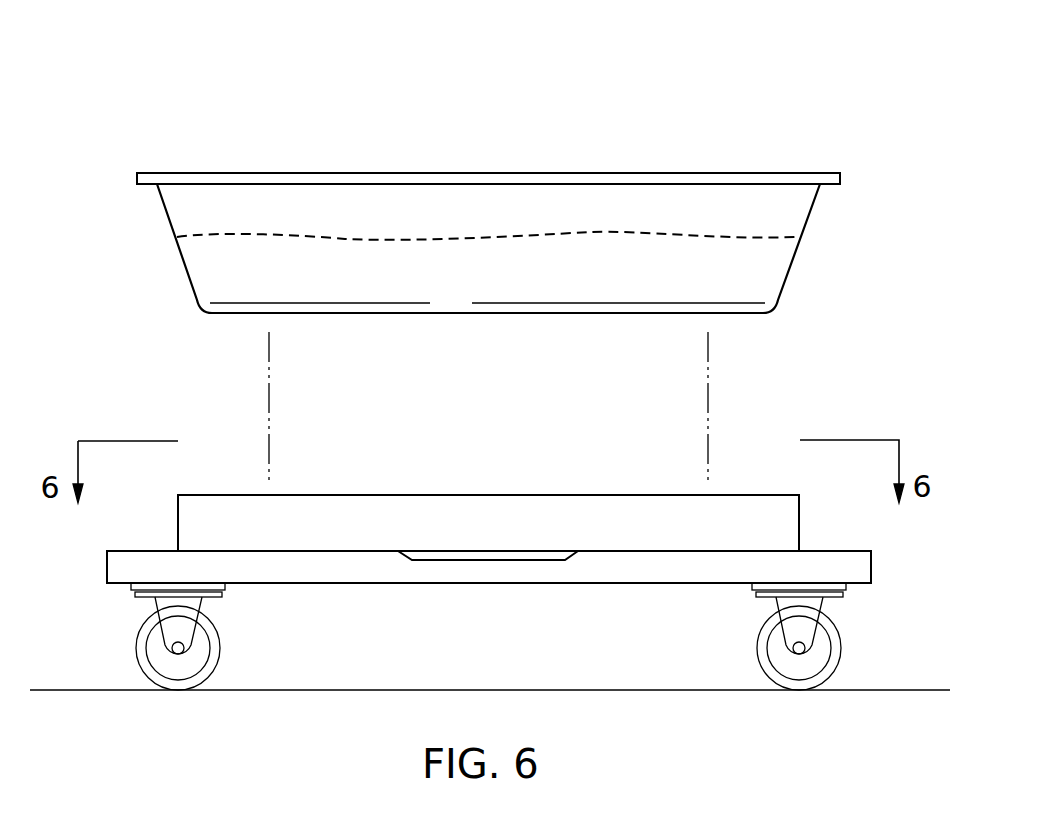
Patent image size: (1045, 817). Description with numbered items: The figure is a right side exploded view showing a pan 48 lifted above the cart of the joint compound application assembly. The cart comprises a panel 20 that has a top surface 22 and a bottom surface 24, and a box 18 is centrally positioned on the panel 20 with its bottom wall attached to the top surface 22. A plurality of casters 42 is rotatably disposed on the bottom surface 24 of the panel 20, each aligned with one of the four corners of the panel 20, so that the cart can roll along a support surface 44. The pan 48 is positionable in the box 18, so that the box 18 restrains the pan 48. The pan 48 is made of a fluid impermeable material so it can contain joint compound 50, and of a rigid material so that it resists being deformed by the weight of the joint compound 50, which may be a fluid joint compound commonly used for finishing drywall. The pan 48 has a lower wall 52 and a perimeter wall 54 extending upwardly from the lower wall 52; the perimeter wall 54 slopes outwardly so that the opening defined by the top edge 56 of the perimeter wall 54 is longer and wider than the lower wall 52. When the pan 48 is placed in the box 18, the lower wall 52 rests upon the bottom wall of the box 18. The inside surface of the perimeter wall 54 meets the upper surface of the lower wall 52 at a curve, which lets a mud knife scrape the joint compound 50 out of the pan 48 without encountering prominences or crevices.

The box 18 is at (178, 520).
The panel 20 is at (873, 551).
The top surface 22 is at (832, 551).
The bottom surface 24 is at (657, 583).
The casters 42 is at (164, 690).
The support surface 44 is at (82, 690).
The pan 48 is at (137, 232).
The joint compound 50 is at (592, 232).
The lower wall 52 is at (405, 315).
The perimeter wall 54 is at (333, 270).
The top edge 56 is at (257, 173).